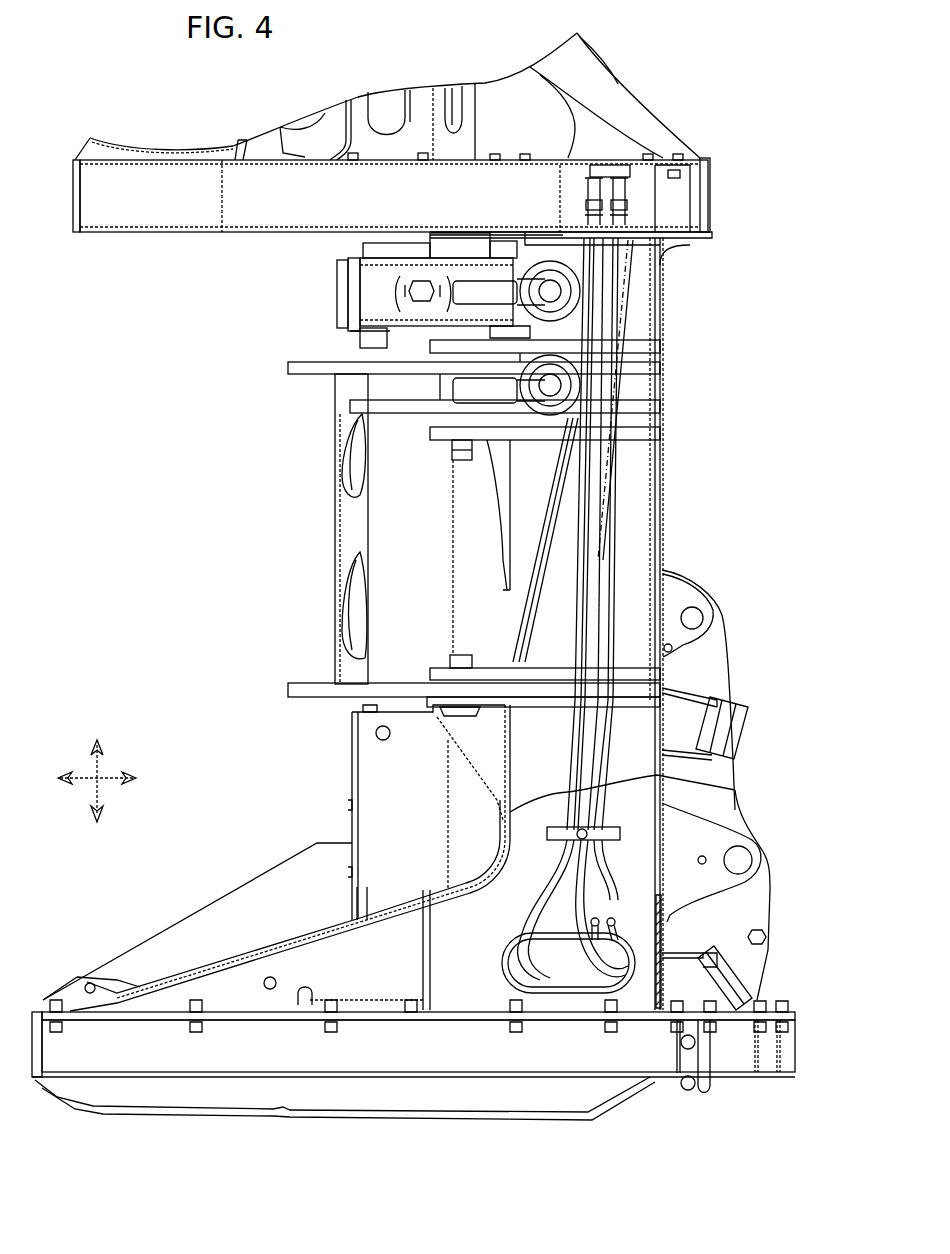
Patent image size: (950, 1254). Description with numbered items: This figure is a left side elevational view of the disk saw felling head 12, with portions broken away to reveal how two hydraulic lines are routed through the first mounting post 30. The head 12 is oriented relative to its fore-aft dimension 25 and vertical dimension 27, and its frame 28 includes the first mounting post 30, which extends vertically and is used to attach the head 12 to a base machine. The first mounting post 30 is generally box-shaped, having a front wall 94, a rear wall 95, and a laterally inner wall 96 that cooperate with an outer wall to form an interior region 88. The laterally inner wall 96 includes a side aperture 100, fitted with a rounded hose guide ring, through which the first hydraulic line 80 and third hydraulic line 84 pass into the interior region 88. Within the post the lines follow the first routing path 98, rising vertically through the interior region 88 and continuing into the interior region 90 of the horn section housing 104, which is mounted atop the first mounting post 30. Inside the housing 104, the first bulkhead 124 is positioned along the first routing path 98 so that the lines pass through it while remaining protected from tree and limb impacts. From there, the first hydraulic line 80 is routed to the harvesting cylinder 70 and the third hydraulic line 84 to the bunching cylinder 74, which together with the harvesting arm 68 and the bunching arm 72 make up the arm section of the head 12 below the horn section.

The head 12 is at (170, 110).
The first bulkhead 124 is at (613, 175).
The interior region of the horn section 90 is at (551, 185).
The housing 104 is at (712, 200).
The bunching arm 72 is at (335, 275).
The bunching cylinder 74 is at (477, 290).
The laterally inner wall 96 is at (643, 303).
The rear wall 95 is at (660, 368).
The first mounting post 30 is at (673, 420).
The first routing path 98 is at (610, 470).
The interior region of the first mounting post 88 is at (617, 507).
The harvesting arm 68 is at (325, 458).
The harvesting cylinder 70 is at (487, 383).
The frame 28 is at (722, 583).
The front wall 94 is at (513, 623).
The fore-aft dimension 25 is at (113, 776).
The vertical dimension 27 is at (113, 795).
The first hydraulic line 80 is at (730, 790).
The third hydraulic line 84 is at (510, 812).
The side aperture 100 is at (630, 995).